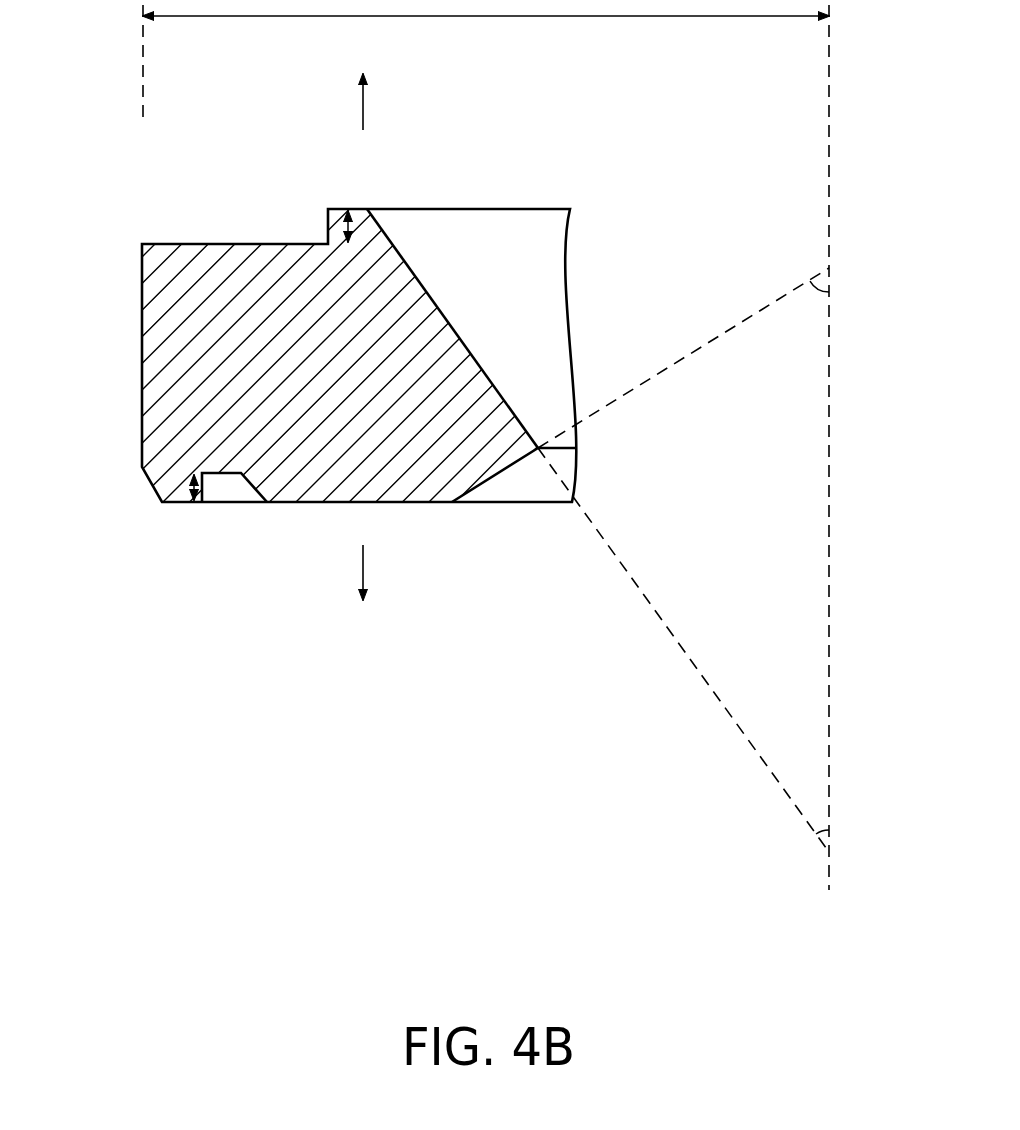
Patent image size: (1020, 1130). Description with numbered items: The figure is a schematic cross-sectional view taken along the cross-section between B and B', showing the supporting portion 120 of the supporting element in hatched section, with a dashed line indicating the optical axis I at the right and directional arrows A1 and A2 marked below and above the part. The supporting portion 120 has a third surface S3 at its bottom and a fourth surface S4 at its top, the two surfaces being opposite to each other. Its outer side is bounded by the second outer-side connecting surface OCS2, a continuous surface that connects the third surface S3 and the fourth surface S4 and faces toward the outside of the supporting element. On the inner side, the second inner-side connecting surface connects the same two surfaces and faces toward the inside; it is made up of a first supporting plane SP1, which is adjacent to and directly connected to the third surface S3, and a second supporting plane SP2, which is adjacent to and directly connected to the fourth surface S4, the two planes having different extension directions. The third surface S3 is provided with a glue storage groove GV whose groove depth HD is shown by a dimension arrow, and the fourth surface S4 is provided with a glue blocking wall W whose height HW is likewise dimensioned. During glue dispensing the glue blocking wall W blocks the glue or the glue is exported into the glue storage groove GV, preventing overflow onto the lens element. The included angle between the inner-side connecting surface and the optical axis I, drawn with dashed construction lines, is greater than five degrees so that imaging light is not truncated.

The supporting portion 120 is at (888, 971).
The second supporting plane SP2 is at (480, 318).
The first supporting plane SP1 is at (556, 459).
The second outer-side connecting surface OCS2 is at (140, 343).
The glue storage groove GV is at (222, 490).
The third surface S3 is at (307, 506).
The fourth surface S4 is at (252, 240).
The glue blocking wall W is at (328, 228).
The height of the glue blocking wall HW is at (352, 226).
The groove depth HD is at (190, 484).
The first direction A1 is at (363, 597).
The second direction A2 is at (363, 82).
The section line end B is at (480, 91).
The section line end B' is at (583, 156).
The optical axis I is at (830, 103).